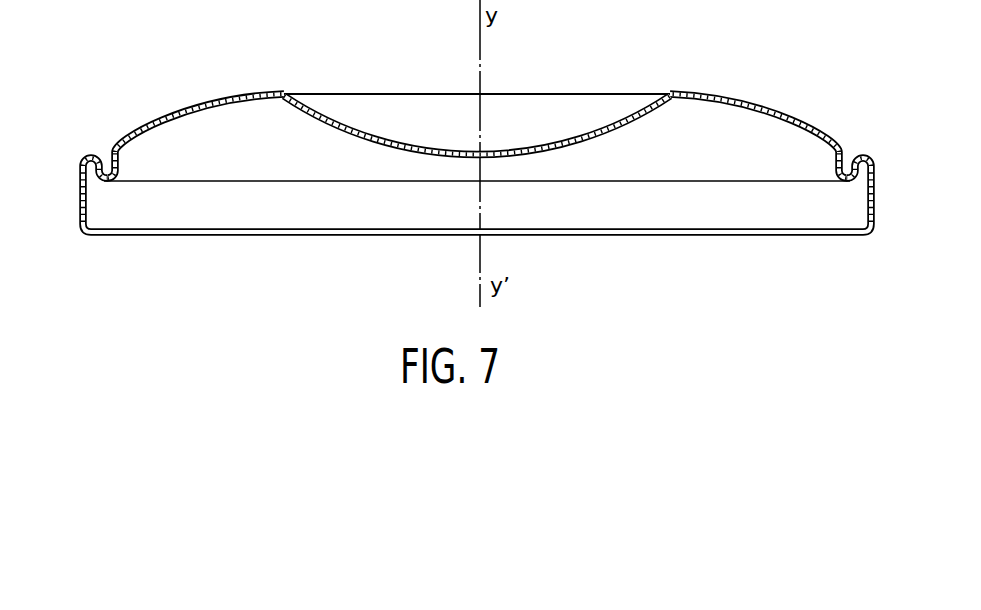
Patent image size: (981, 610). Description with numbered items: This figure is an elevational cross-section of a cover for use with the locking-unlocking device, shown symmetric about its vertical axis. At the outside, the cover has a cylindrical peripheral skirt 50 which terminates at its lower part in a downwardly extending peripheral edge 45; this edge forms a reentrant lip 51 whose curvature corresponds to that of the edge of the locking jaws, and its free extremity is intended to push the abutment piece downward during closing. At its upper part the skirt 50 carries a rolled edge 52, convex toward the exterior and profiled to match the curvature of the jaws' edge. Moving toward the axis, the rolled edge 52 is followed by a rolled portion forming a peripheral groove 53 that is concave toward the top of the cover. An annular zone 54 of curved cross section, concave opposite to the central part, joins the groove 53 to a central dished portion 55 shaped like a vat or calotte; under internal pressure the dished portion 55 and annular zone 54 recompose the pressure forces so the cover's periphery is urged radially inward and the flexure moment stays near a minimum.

The peripheral edge 45 is at (459, 183).
The cylindrical peripheral skirt 50 is at (80, 181).
The reentrant lip 51 is at (88, 236).
The rolled edge 52 is at (92, 156).
The peripheral groove 53 is at (110, 172).
The annular zone 54 is at (477, 106).
The dished portion 55 is at (355, 128).